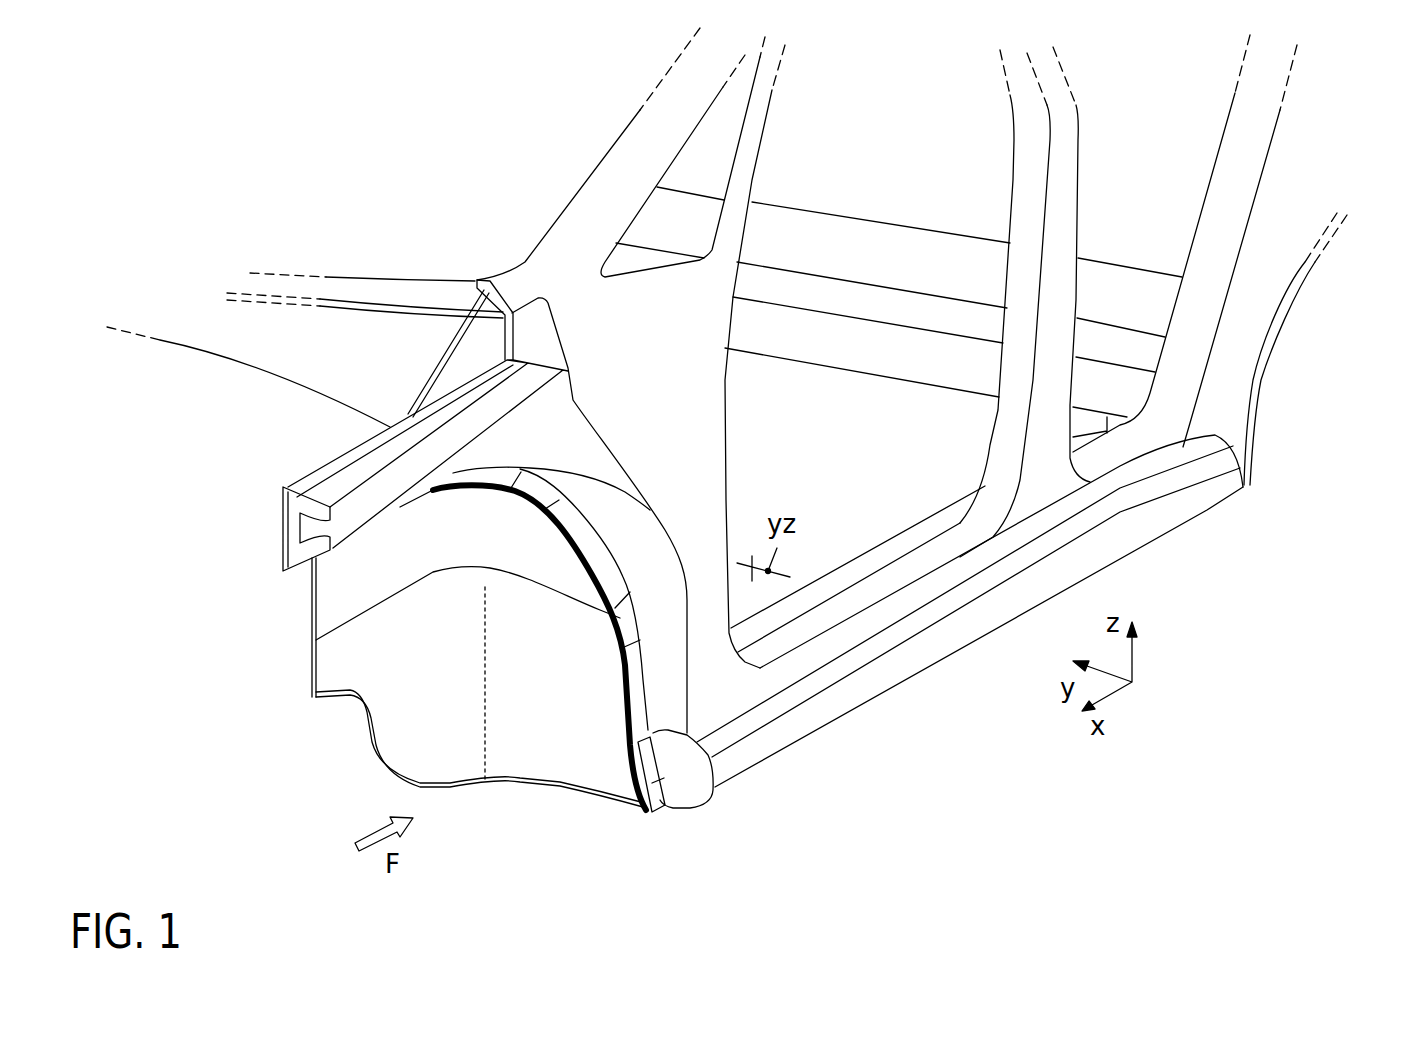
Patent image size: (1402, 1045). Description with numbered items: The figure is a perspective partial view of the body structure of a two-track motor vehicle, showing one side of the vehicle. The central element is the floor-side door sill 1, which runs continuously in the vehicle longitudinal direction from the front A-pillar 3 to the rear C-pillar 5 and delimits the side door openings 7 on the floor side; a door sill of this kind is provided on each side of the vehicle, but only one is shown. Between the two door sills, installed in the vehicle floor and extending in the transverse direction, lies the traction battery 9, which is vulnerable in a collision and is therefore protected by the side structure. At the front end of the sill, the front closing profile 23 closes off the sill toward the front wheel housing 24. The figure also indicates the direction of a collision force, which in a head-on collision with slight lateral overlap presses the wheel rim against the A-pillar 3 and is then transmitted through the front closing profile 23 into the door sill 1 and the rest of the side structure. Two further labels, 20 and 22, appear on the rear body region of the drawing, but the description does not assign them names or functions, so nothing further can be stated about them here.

The door sill 1 is at (840, 732).
The front A-pillar 3 is at (665, 378).
The rear C-pillar 5 is at (1293, 238).
The side door openings 7 is at (1000, 140).
The traction battery 9 is at (902, 533).
The rear side wall region 20 is at (1400, 262).
The rear wheel arch 22 is at (1252, 405).
The front closing profile 23 is at (606, 718).
The front wheel housing 24 is at (563, 640).